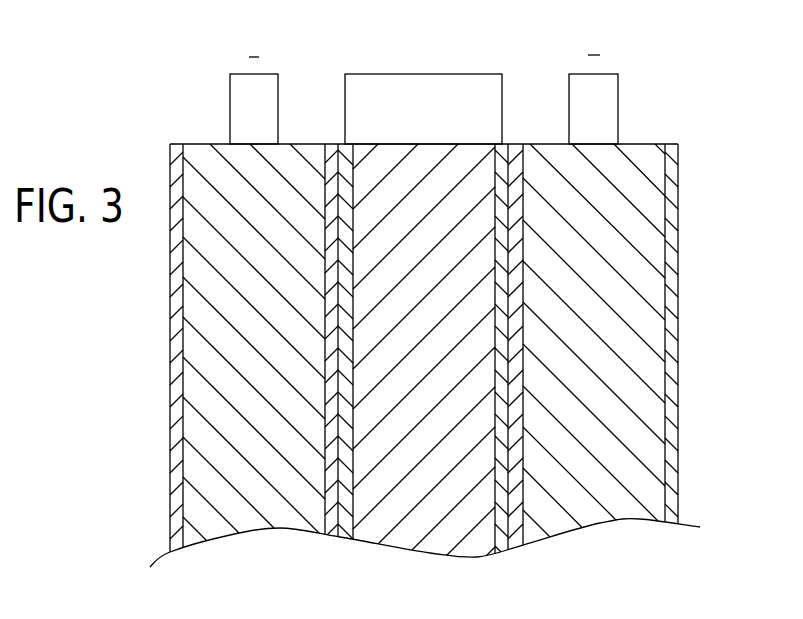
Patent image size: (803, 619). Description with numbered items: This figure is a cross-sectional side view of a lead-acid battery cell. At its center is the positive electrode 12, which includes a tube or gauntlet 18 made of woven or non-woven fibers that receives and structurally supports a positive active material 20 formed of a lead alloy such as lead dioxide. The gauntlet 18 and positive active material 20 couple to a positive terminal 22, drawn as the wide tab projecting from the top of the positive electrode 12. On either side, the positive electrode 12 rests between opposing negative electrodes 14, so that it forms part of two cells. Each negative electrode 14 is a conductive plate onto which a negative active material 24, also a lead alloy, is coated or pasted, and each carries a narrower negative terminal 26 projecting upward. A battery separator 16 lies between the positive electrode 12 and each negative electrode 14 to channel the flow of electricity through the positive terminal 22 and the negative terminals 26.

The positive electrode 12 is at (480, 35).
The negative electrode 14 is at (150, 155).
The battery separator 16 is at (332, 143).
The tube or gauntlet 18 is at (348, 530).
The positive active material 20 is at (437, 540).
The positive terminal 22 is at (381, 73).
The negative active material 24 is at (247, 518).
The negative terminal 26 is at (230, 110).